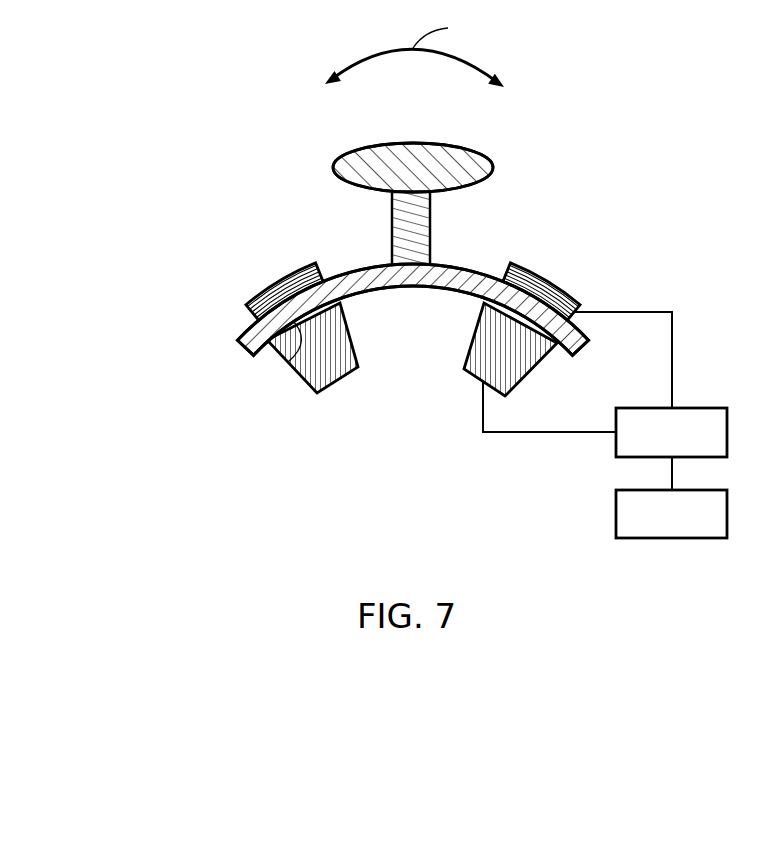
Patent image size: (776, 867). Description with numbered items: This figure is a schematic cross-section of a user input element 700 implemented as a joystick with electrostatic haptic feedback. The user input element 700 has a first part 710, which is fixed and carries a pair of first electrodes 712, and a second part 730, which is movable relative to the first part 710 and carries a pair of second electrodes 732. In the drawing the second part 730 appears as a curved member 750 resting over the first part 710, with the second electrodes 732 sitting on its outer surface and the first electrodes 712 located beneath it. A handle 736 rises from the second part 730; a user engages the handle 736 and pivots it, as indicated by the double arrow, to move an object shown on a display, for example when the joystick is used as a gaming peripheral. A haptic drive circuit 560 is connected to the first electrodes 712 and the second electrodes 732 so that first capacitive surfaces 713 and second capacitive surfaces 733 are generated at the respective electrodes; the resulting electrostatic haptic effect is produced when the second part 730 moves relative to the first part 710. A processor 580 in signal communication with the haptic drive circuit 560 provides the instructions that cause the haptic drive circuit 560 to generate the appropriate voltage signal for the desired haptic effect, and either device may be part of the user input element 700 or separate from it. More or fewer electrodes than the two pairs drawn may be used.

The user input element 700 is at (137, 105).
The first part 710 is at (410, 426).
The first electrodes 712 is at (470, 338).
The first capacitive surfaces 713 is at (295, 355).
The second part 730 is at (299, 217).
The second electrodes 732 is at (281, 277).
The second capacitive surfaces 733 is at (252, 300).
The handle 736 is at (516, 161).
The curved rotor yoke 750 is at (438, 272).
The haptic drive circuit 560 is at (697, 450).
The processor 580 is at (697, 530).